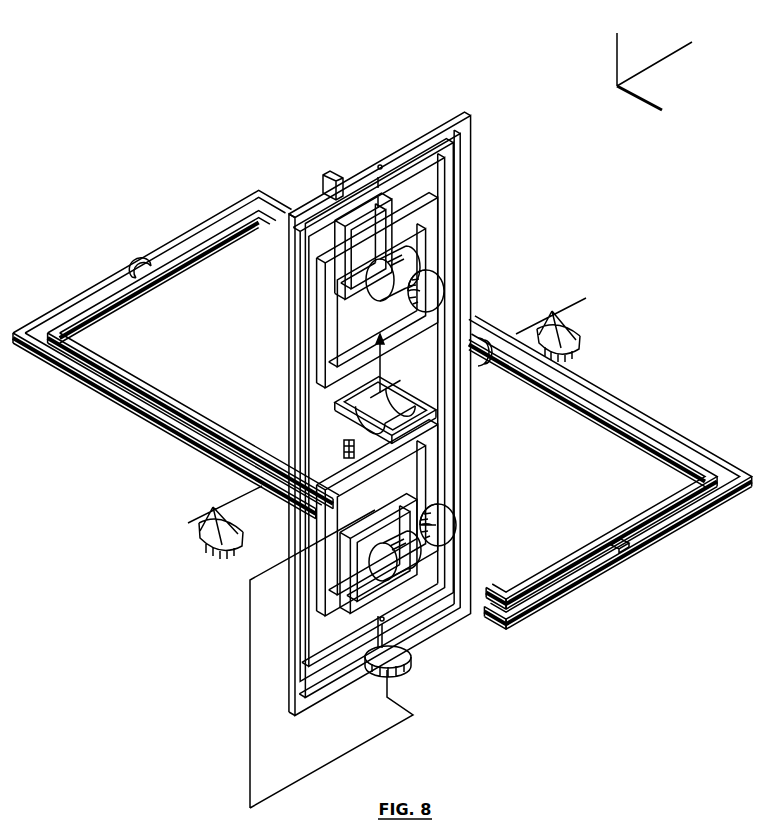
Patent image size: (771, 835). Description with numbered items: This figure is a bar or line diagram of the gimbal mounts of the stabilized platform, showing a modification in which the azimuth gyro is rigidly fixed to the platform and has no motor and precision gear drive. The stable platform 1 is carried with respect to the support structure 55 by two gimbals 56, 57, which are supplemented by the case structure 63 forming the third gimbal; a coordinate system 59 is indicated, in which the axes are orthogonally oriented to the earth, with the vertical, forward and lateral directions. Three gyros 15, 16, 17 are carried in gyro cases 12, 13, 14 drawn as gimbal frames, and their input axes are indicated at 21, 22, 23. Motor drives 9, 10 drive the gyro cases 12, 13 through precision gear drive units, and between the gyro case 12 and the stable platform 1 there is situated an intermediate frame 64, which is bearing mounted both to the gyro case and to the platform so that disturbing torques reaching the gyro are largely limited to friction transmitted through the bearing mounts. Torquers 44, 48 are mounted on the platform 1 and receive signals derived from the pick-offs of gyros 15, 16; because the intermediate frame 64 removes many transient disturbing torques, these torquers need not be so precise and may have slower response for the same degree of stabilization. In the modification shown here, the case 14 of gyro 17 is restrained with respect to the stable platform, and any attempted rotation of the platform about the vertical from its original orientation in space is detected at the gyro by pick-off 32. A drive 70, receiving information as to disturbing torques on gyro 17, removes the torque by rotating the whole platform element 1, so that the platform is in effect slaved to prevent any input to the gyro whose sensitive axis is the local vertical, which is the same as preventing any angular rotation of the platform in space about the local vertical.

The stable platform 1 is at (452, 176).
The motor drive 9 is at (440, 288).
The motor drive 10 is at (445, 520).
The gyro case 12 is at (400, 240).
The gyro case 13 is at (410, 552).
The gyro case 14 is at (437, 410).
The gyro 15 is at (393, 262).
The gyro 16 is at (387, 569).
The gyro 17 is at (393, 410).
The input axis 21 is at (297, 206).
The input axis 22 is at (292, 613).
The input axis 23 is at (378, 368).
The pick-off 32 is at (340, 443).
The air-jet torquer 44 is at (482, 342).
The torquer 48 is at (138, 268).
The support structure 55 is at (560, 333).
The gimbal 56 is at (642, 547).
The gimbal 57 is at (622, 538).
The coordinate system 59 is at (665, 63).
The case structure 63 is at (437, 133).
The intermediate frame 64 is at (403, 220).
The drive 70 is at (402, 665).